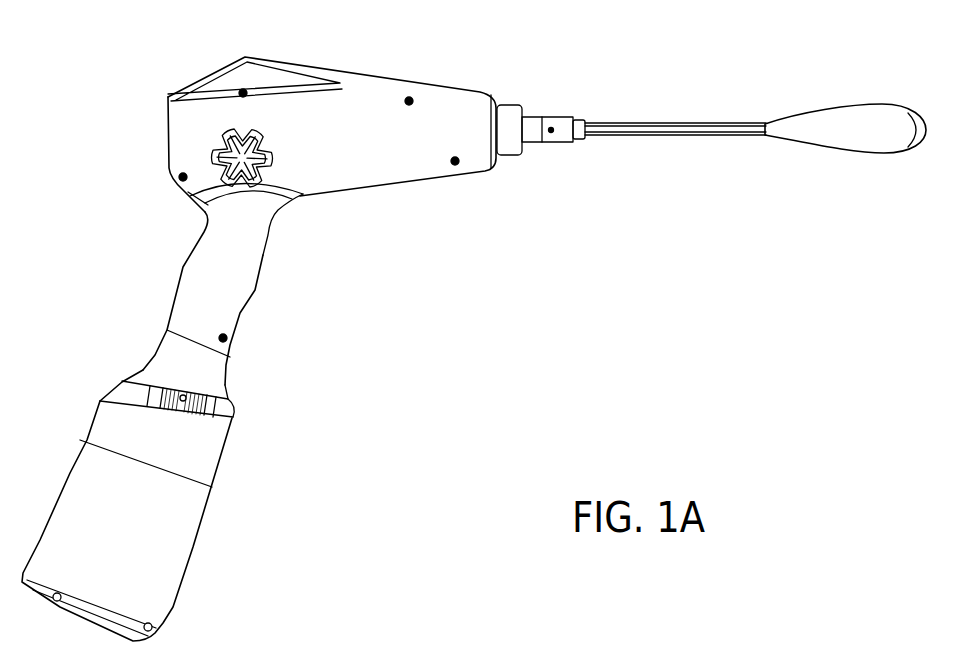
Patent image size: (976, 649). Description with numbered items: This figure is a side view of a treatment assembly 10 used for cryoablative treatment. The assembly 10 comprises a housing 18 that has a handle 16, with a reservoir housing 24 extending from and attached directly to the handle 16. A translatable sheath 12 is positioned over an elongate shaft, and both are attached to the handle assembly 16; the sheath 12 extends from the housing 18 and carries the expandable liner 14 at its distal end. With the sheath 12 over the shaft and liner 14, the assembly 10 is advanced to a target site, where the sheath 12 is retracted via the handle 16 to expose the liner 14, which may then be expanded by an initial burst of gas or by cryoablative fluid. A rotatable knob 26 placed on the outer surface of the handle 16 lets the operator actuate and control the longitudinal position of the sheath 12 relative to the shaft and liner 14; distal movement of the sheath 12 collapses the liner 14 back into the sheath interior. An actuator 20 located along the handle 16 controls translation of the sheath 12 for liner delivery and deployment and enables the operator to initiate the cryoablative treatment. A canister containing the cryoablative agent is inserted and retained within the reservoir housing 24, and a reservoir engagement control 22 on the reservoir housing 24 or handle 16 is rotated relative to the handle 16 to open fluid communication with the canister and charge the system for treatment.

The treatment assembly 10 is at (131, 64).
The sheath 12 is at (672, 137).
The liner 14 is at (863, 152).
The handle 16 is at (182, 267).
The housing 18 is at (363, 193).
The actuator 20 is at (273, 223).
The reservoir engagement control 22 is at (234, 412).
The reservoir housing 24 is at (197, 547).
The rotatable knob 26 is at (243, 152).